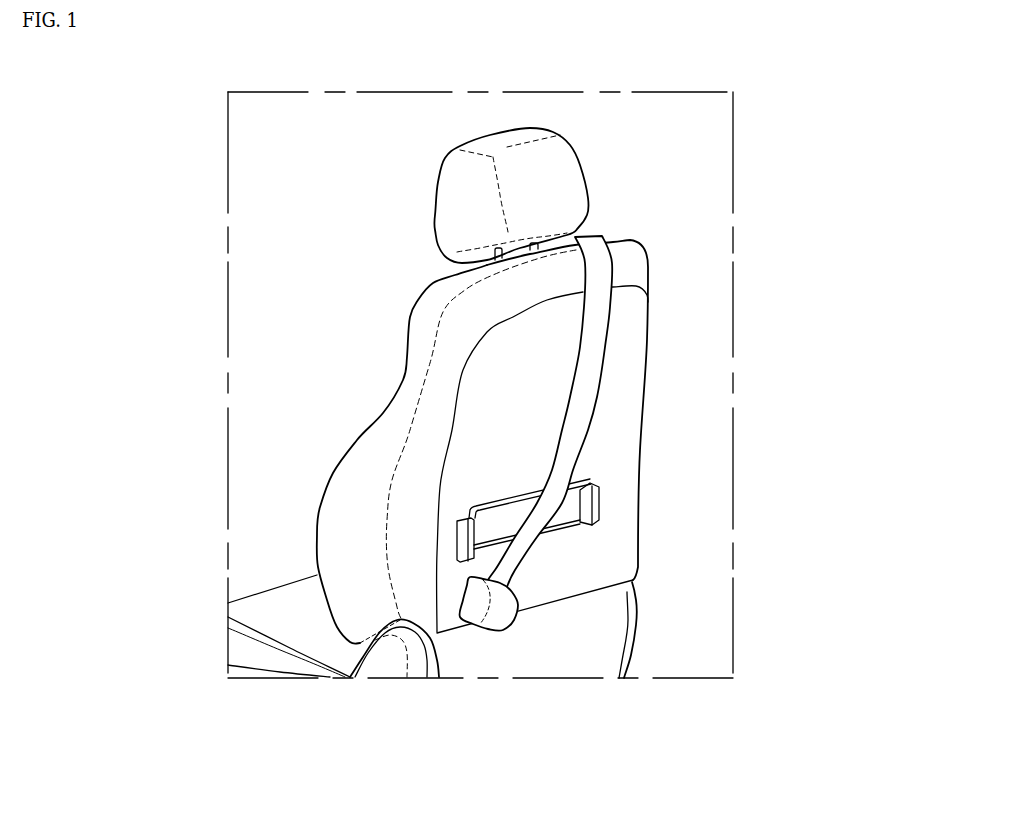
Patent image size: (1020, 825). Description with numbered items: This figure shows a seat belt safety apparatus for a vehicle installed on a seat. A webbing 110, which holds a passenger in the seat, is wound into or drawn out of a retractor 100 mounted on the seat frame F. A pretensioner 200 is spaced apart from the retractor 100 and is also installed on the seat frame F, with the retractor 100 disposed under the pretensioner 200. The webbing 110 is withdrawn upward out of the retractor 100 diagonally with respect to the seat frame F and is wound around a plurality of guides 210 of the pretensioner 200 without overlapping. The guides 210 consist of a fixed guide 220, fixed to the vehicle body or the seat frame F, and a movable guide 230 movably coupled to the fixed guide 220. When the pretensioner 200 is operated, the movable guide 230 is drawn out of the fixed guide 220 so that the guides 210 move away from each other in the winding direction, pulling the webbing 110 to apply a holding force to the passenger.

The webbing 110 is at (592, 375).
The pretensioner 200 is at (481, 497).
The guides 210 is at (481, 497).
The movable guide 230 is at (487, 503).
The fixed guide 220 is at (577, 525).
The retractor 100 is at (493, 636).
The seat frame F is at (572, 577).